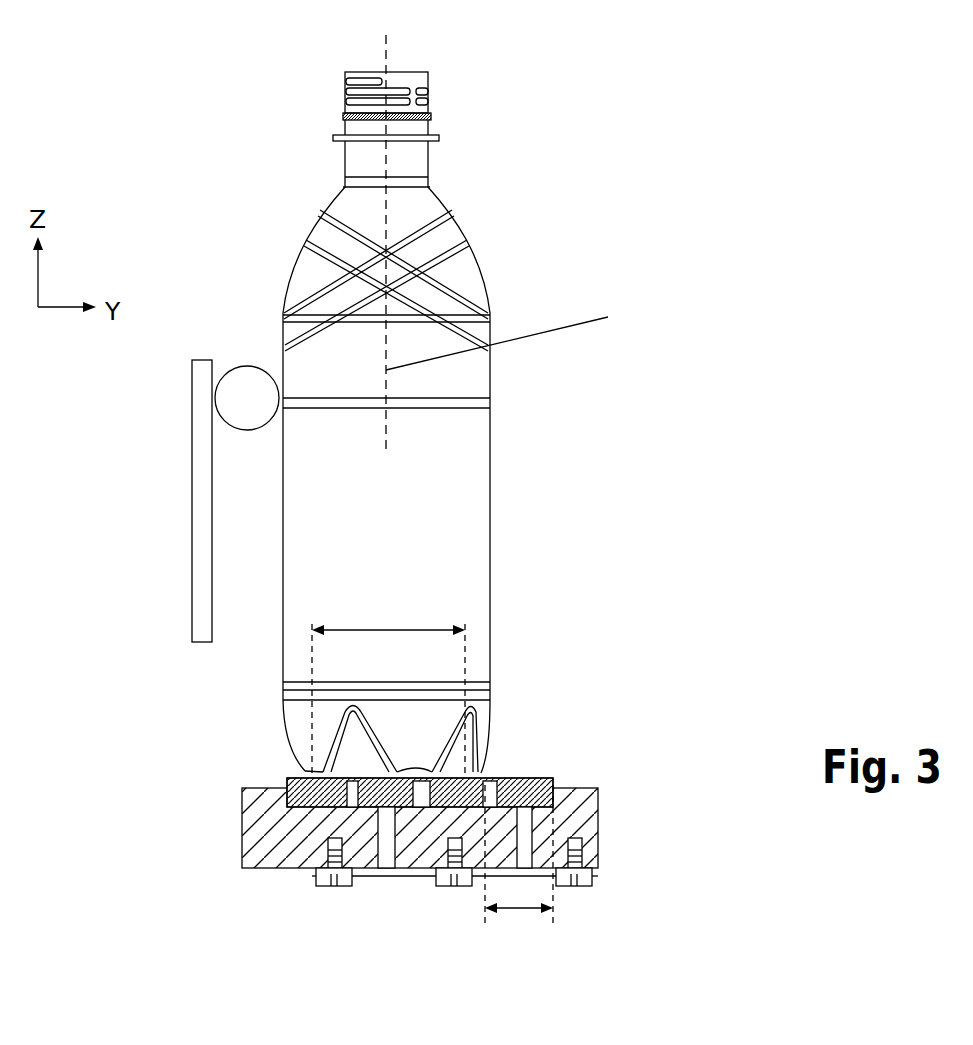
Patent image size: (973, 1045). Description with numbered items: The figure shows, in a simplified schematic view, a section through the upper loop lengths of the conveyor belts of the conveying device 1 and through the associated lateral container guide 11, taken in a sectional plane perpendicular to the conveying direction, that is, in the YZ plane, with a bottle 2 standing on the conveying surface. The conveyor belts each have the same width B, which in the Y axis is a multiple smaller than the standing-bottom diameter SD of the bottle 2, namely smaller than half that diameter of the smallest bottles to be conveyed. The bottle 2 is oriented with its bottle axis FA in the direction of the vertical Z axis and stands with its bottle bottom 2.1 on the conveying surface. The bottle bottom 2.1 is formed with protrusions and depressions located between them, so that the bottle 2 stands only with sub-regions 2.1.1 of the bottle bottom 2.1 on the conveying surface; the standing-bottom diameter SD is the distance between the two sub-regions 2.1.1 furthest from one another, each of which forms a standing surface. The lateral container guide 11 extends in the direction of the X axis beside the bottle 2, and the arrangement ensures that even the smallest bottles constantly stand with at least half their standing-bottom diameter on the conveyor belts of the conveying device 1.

The conveying device 1 is at (702, 195).
The bottle 2 is at (490, 558).
The bottle bottom 2.1 is at (530, 721).
The sub-regions of the bottle bottom 2.1.1 is at (288, 742).
The lateral container guide 11 is at (232, 400).